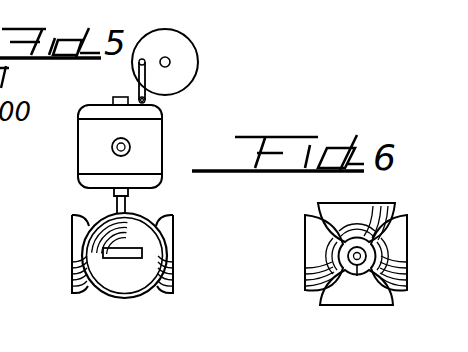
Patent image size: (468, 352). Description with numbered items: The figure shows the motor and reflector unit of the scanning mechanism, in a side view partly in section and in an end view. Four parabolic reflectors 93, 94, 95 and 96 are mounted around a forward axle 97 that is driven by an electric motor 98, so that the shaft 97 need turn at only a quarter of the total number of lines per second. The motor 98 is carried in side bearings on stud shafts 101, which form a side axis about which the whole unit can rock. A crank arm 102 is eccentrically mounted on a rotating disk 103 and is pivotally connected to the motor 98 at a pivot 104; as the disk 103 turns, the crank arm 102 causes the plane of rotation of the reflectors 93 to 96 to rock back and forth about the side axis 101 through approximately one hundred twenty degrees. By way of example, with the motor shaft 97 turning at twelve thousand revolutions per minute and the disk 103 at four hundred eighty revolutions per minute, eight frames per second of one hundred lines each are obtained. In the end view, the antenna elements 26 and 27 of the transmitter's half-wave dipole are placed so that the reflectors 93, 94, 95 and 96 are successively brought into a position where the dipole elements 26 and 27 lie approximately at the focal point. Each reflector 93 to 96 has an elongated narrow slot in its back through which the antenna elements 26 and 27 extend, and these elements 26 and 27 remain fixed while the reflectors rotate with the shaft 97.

In FIG. 5, the parabolic reflector 93 is at (124, 278).
In FIG. 6, the parabolic reflector 93 is at (397, 243).
In FIG. 5, the parabolic reflector 94 is at (79, 236).
In FIG. 6, the parabolic reflector 94 is at (349, 212).
In FIG. 6, the parabolic reflector 95 is at (319, 248).
In FIG. 5, the parabolic reflector 96 is at (167, 231).
In FIG. 6, the parabolic reflector 96 is at (361, 289).
In FIG. 5, the forward axle 97 is at (123, 204).
In FIG. 5, the electric motor 98 is at (145, 148).
In FIG. 5, the stud shaft 101 is at (112, 147).
In FIG. 5, the crank arm 102 is at (138, 86).
In FIG. 5, the rotating disk 103 is at (186, 67).
In FIG. 5, the pivotal connection 104 is at (145, 100).
In FIG. 6, the antenna element 26 is at (351, 269).
In FIG. 6, the antenna element 27 is at (360, 269).